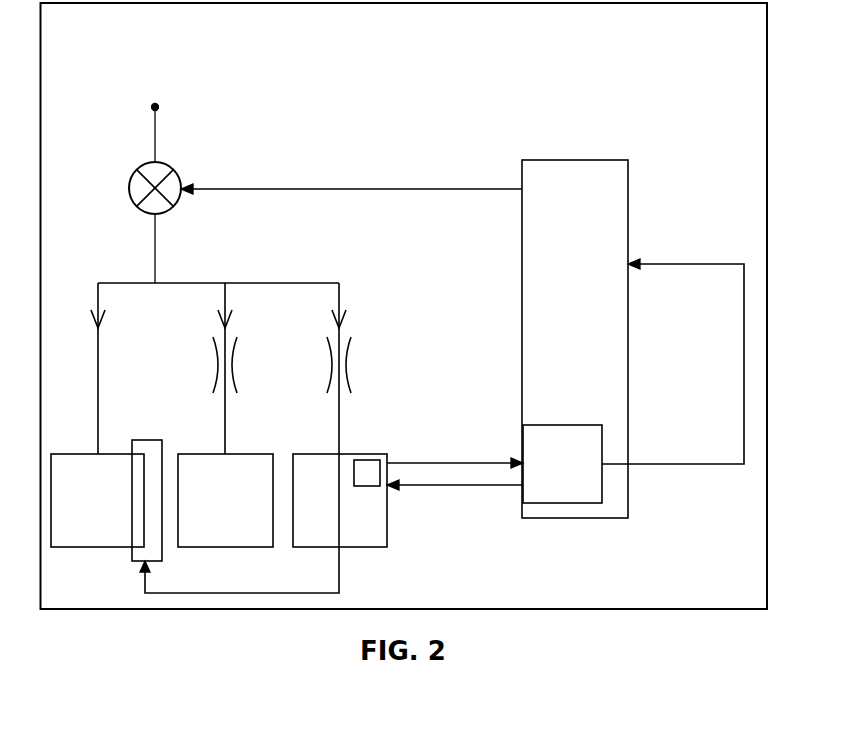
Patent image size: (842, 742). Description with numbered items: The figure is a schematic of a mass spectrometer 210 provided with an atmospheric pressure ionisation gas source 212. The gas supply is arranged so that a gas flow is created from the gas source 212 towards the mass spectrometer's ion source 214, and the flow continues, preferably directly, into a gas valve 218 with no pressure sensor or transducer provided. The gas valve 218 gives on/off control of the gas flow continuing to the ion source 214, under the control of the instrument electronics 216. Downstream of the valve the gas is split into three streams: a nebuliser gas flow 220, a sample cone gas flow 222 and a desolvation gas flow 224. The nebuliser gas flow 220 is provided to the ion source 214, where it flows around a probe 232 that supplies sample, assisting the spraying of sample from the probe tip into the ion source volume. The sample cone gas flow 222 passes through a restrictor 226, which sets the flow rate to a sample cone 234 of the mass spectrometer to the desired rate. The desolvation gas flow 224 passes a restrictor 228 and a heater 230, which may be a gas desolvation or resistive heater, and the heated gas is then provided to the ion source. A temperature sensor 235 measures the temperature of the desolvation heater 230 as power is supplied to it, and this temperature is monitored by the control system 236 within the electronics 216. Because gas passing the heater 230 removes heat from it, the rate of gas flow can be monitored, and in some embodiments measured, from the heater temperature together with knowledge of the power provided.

The mass spectrometer 210 is at (199, 610).
The atmospheric pressure ionisation gas source 212 is at (158, 106).
The ion source 214 is at (136, 440).
The instrument electronics 216 is at (587, 168).
The gas valve 218 is at (163, 171).
The nebuliser gas flow 220 is at (105, 316).
The sample cone gas flow 222 is at (234, 318).
The desolvation gas flow 224 is at (348, 318).
The restrictor 226 is at (217, 353).
The restrictor 228 is at (347, 355).
The desolvation heater 230 is at (348, 522).
The probe 232 is at (83, 520).
The sample cone 234 is at (205, 522).
The temperature sensor 235 is at (364, 460).
The control system 236 is at (565, 503).